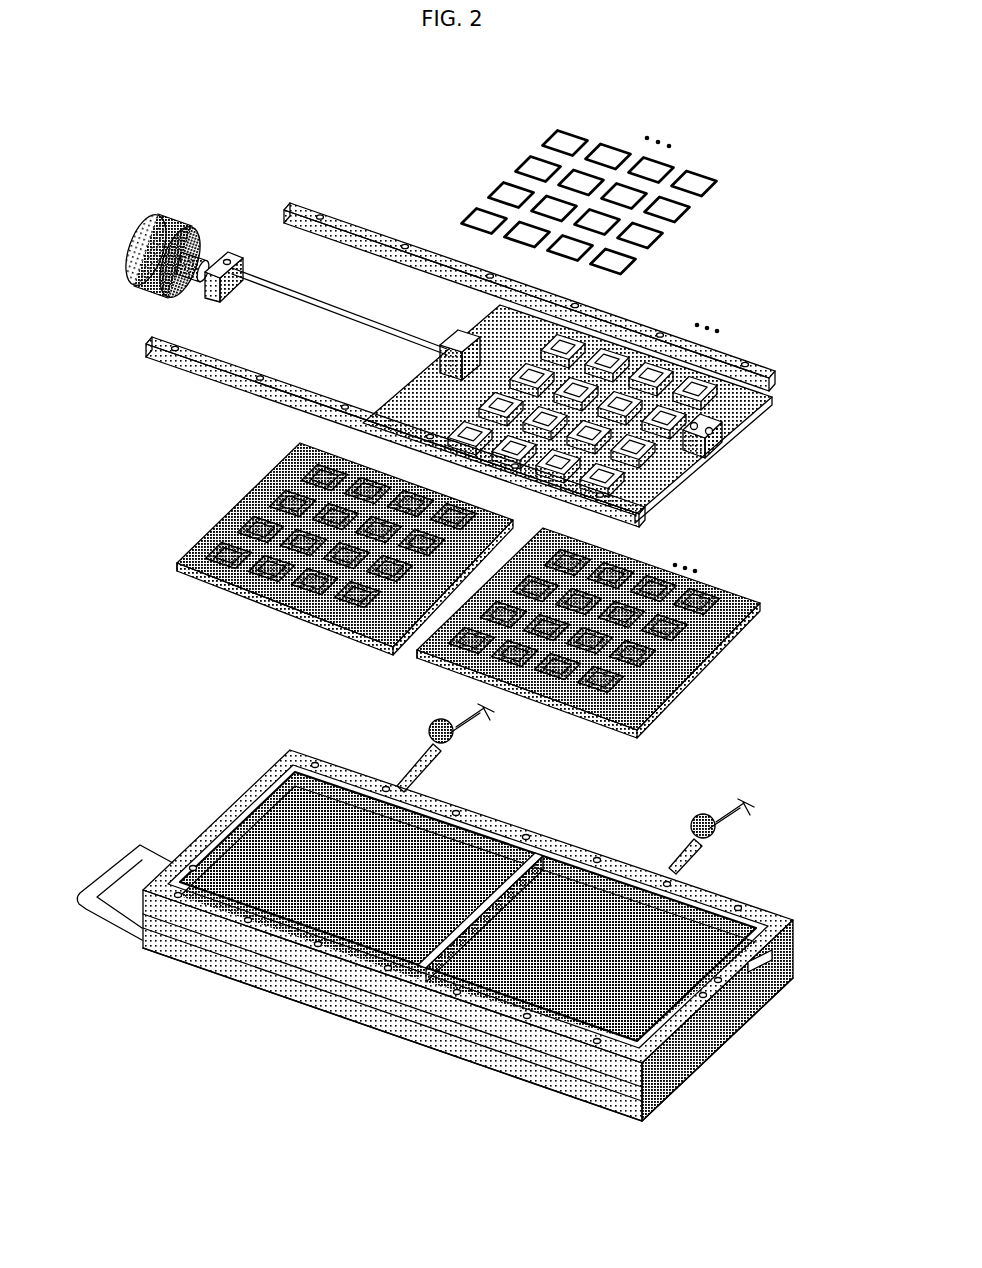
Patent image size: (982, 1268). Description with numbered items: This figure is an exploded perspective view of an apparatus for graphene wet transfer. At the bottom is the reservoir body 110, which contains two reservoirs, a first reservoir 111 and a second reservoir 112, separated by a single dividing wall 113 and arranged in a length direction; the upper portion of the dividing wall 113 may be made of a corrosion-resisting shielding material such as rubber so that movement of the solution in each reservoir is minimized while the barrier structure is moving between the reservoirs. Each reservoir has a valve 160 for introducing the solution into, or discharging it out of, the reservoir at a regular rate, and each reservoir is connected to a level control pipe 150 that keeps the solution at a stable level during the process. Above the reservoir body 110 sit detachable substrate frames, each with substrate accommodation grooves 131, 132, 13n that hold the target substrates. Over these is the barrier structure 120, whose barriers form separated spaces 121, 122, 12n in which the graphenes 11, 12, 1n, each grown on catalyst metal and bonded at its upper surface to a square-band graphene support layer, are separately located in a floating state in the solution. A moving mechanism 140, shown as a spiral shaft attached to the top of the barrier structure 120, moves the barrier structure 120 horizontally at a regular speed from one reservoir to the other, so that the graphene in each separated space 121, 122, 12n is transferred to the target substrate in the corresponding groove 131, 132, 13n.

The graphene 11 is at (566, 132).
The graphene 12 is at (609, 146).
The graphene 1n is at (694, 172).
The moving mechanism 140 is at (263, 278).
The barrier structure 120 is at (598, 403).
The separated space 121 is at (582, 334).
The separated space 122 is at (607, 348).
The separated space 12n is at (702, 378).
The substrate accommodation groove 131 is at (562, 566).
The substrate accommodation groove 132 is at (614, 571).
The substrate accommodation groove 13n is at (706, 597).
The valve 160 is at (432, 717).
The reservoir body 110 is at (435, 927).
The first reservoir 111 is at (330, 850).
The second reservoir 112 is at (573, 937).
The dividing wall 113 is at (450, 927).
The level control pipe 150 is at (717, 1057).